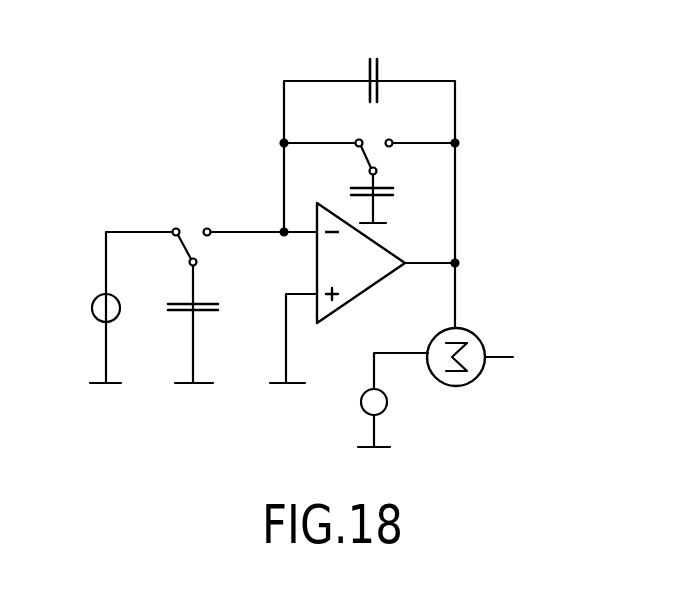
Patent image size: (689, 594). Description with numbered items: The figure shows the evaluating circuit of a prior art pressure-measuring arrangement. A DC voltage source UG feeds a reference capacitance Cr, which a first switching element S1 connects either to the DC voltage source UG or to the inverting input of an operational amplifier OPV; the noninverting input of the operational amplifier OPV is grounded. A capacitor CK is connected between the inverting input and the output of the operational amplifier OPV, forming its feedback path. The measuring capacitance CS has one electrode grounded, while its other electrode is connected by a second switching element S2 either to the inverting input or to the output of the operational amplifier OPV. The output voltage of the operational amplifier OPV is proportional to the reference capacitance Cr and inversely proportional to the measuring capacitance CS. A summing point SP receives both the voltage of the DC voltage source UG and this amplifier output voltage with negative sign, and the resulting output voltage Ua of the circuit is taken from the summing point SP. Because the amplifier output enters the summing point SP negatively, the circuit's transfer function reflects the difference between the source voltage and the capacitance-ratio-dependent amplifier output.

The DC voltage source UG is at (78, 258).
The first switching element S1 is at (192, 232).
The reference capacitance Cr is at (210, 302).
The capacitor CK is at (393, 67).
The second switching element S2 is at (374, 143).
The measuring capacitance CS is at (391, 197).
The operational amplifier OPV is at (366, 299).
The summing point SP is at (482, 343).
The output voltage Ua is at (492, 390).